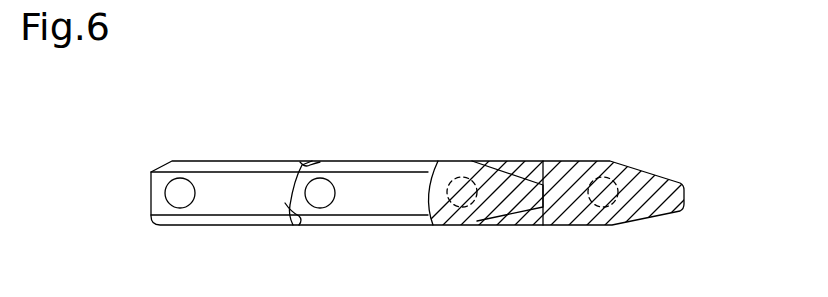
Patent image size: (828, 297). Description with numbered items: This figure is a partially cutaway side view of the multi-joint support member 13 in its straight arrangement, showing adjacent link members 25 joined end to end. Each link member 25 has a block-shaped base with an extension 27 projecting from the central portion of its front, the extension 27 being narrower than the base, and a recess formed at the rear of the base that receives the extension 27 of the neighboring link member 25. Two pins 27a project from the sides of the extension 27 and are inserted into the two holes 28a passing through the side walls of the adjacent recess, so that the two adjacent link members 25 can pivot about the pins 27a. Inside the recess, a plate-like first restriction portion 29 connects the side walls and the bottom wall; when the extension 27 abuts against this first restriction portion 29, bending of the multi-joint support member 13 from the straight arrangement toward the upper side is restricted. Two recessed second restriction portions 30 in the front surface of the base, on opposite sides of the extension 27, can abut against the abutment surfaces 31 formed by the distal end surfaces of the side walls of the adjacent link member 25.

The multi-joint support member 13 is at (639, 120).
The link member 25 is at (221, 160).
The extension 27 is at (512, 182).
The pin 27a is at (330, 201).
The hole 28a is at (170, 203).
The first restriction portion 29 is at (519, 222).
The second restriction portion 30 is at (293, 225).
The abutment surface 31 is at (286, 196).